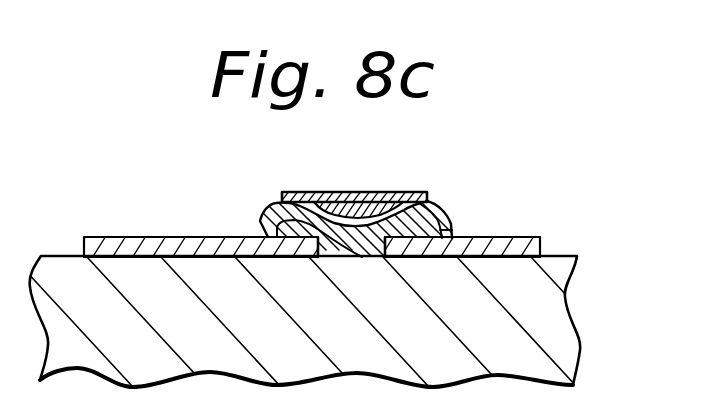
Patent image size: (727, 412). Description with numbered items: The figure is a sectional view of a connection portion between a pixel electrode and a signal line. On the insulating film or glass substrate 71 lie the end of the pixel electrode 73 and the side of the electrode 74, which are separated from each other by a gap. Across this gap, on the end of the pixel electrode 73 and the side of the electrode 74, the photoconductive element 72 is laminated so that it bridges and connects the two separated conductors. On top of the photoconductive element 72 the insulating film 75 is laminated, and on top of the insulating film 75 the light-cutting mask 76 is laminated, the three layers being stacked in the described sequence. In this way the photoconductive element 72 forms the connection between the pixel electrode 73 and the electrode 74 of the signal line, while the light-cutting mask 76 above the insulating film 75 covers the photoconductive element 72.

The glass substrate 71 is at (552, 317).
The photoconductive element 72 is at (428, 205).
The pixel electrode 73 is at (138, 236).
The electrode 74 is at (522, 237).
The insulating film 75 is at (260, 221).
The light-cutting mask 76 is at (345, 192).